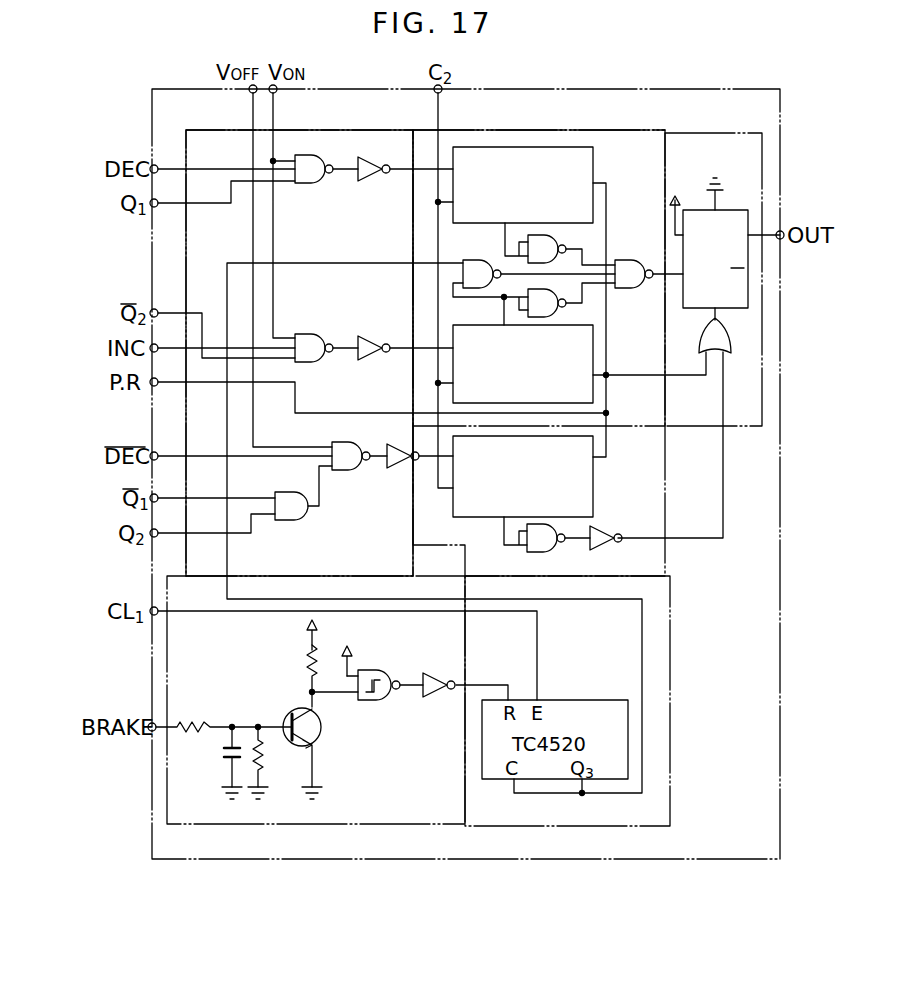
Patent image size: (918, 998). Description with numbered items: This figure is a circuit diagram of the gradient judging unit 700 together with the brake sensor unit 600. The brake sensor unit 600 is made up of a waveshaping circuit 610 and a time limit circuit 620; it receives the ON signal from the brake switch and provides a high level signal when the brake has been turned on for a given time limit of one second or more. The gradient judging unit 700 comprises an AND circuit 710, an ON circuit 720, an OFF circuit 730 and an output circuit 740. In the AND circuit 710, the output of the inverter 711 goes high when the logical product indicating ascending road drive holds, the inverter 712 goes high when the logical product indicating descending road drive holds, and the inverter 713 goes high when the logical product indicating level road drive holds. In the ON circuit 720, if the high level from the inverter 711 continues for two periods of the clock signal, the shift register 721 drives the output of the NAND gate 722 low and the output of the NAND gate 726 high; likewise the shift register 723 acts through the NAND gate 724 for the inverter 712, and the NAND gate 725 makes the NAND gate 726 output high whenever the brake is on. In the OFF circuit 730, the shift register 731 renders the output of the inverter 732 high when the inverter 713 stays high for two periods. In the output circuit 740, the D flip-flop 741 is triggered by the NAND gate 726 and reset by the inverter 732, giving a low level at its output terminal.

The brake sensor unit 600 is at (647, 860).
The waveshaping circuit 610 is at (355, 826).
The time limit circuit 620 is at (672, 798).
The gradient judging unit 700 is at (655, 90).
The AND circuit 710 is at (238, 128).
The inverter 711 is at (362, 163).
The inverter 712 is at (372, 341).
The inverter 713 is at (390, 470).
The ON circuit 720 is at (510, 131).
The shift register 721 is at (598, 175).
The NAND gate 722 is at (560, 236).
The shift register 723 is at (594, 350).
The NAND gate 724 is at (578, 306).
The NAND gate 725 is at (490, 262).
The NAND gate 726 is at (632, 263).
The OFF circuit 730 is at (666, 548).
The shift register 731 is at (594, 477).
The inverter 732 is at (598, 528).
The output circuit 740 is at (683, 133).
The D flip-flop 741 is at (693, 210).